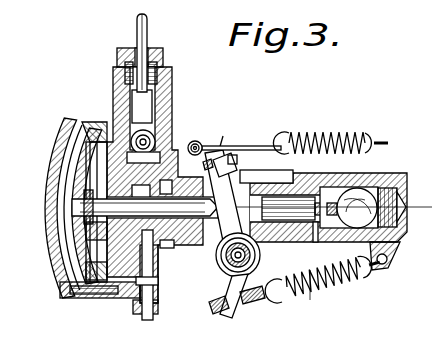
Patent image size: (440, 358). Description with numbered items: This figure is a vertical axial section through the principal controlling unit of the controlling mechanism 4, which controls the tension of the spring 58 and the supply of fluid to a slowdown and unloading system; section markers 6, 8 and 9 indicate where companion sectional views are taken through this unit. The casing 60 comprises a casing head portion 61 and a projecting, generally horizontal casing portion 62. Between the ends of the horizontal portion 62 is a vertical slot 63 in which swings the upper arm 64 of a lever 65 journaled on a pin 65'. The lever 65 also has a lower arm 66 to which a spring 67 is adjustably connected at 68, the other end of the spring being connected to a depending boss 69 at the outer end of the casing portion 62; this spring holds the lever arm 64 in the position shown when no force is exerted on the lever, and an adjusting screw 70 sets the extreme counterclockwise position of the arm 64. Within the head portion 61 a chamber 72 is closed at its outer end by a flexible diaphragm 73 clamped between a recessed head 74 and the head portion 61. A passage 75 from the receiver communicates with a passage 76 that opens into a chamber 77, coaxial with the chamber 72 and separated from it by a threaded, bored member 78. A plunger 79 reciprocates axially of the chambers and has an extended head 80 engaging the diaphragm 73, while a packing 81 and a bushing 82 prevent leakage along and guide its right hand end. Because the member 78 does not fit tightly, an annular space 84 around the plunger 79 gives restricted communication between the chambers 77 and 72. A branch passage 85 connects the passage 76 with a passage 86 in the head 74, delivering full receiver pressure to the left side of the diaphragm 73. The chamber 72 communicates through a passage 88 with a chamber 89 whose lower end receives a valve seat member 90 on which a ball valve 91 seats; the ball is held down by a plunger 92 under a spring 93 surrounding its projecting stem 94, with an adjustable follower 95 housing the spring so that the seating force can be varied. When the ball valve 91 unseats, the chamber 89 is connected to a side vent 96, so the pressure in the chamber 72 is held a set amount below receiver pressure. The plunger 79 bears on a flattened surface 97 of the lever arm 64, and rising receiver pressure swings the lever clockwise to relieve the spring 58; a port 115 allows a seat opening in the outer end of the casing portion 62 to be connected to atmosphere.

The controlling mechanism 4 is at (248, 352).
The section line 6- 6 is at (192, 226).
The section line 8- 8 is at (102, 325).
The section line 9- 9 is at (72, 207).
The spring 58 is at (333, 138).
The casing 60 is at (159, 288).
The casing head portion 61 is at (92, 126).
The horizontal casing portion 62 is at (270, 242).
The slot 63 is at (253, 197).
The upper arm 64 is at (210, 156).
The lever 65 is at (226, 266).
The pin 65' is at (209, 303).
The lower arm 66 is at (226, 314).
The spring 67 is at (343, 284).
The adjustable connection 68 is at (255, 302).
The depending boss 69 is at (388, 264).
The adjusting screw 70 is at (226, 134).
The chamber 72 is at (92, 258).
The flexible diaphragm 73 is at (66, 160).
The recessed head 74 is at (76, 175).
The passage 75 is at (147, 320).
The passage 76 is at (141, 288).
The chamber 77 is at (176, 143).
The threaded bored member 78 is at (84, 197).
The plunger 79 is at (72, 207).
The extended head 80 is at (92, 240).
The packing 81 is at (162, 248).
The bushing 82 is at (159, 262).
The annular space 84 is at (78, 300).
The branch passage 85 is at (120, 300).
The passage 86 is at (80, 286).
The passage 88 is at (84, 146).
The chamber 89 is at (127, 103).
The valve seat member 90 is at (96, 120).
The ball valve 91 is at (168, 103).
The plunger 92 is at (174, 80).
The spring 93 is at (157, 66).
The stem 94 is at (137, 27).
The adjustable follower 95 is at (120, 53).
The side vent 96 is at (176, 118).
The flattened surface 97 is at (217, 260).
The port 115 is at (310, 300).